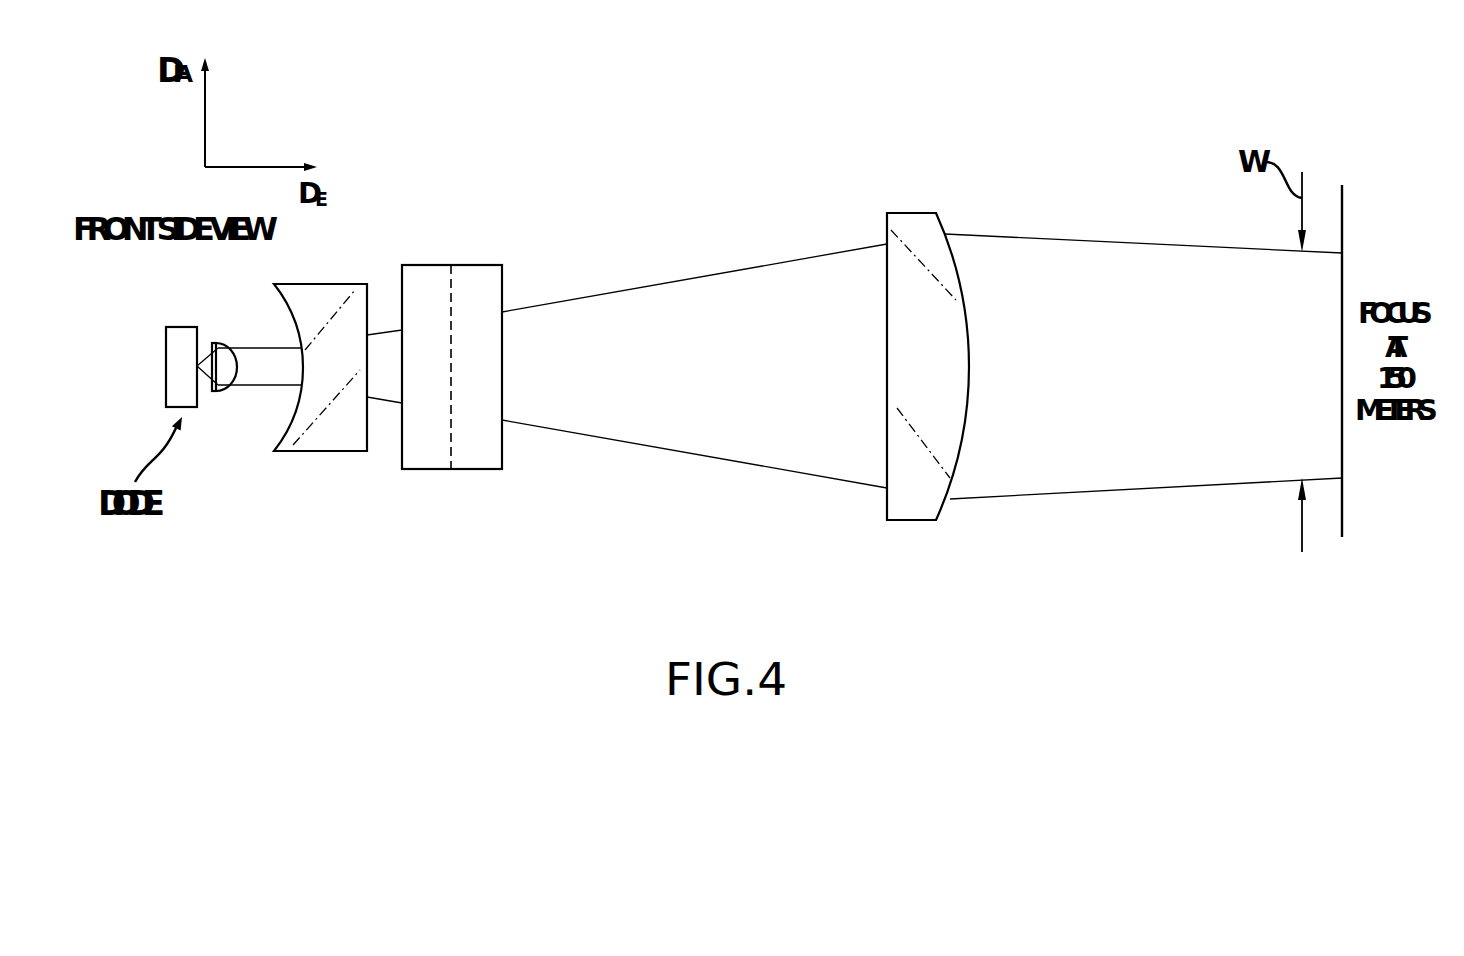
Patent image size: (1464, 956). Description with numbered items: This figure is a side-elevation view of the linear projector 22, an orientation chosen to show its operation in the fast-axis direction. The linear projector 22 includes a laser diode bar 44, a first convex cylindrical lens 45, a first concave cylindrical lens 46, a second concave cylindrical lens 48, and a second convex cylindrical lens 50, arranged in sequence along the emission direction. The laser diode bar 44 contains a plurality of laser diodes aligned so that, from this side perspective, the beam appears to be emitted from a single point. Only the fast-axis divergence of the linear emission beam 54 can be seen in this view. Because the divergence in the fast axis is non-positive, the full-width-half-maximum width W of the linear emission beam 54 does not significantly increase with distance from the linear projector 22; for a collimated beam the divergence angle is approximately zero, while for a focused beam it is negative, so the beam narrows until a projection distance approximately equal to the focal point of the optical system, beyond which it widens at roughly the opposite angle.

The linear projector 22 is at (1068, 137).
The laser diode bar 44 is at (166, 343).
The first convex cylindrical lens 45 is at (227, 391).
The first concave cylindrical lens 46 is at (328, 451).
The second concave cylindrical lens 48 is at (437, 469).
The second convex cylindrical lens 50 is at (908, 521).
The linear emission beam 54 is at (703, 258).